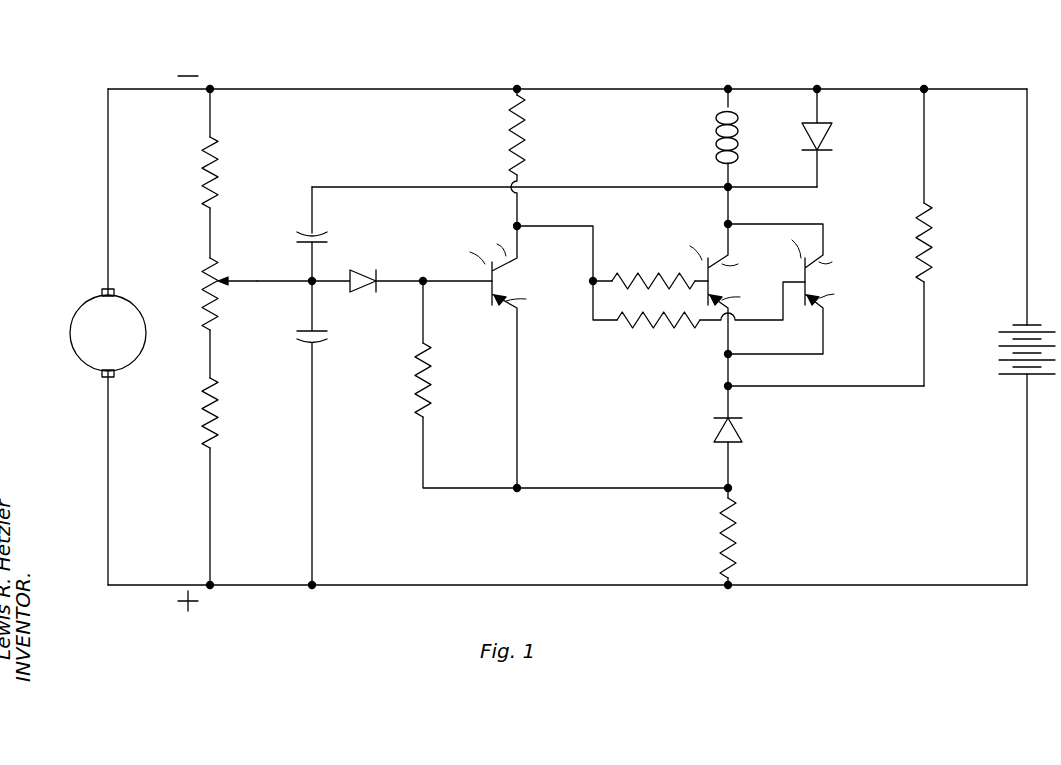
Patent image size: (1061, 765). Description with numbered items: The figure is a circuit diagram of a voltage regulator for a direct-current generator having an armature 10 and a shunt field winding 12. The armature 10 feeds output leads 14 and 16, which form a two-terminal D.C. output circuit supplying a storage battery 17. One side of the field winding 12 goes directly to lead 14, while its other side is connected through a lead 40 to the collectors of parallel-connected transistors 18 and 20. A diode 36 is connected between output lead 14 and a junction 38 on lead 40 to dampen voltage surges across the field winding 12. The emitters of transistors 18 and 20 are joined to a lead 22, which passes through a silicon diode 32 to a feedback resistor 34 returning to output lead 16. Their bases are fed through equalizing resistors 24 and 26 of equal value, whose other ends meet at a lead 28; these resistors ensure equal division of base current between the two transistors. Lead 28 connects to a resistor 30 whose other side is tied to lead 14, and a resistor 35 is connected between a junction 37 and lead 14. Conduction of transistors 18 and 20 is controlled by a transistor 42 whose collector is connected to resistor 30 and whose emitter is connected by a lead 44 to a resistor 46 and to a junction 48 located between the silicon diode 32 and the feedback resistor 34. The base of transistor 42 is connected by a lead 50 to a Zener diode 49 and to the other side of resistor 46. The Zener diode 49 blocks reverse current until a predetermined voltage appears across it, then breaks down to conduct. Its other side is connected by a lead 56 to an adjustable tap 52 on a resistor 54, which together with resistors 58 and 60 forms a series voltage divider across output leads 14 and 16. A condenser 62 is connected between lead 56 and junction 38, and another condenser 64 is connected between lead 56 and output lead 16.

The armature 10 is at (72, 333).
The shunt field winding 12 is at (717, 128).
The output lead 14 is at (413, 89).
The output lead 16 is at (390, 585).
The storage battery 17 is at (1003, 328).
The transistor 18 is at (713, 283).
The transistor 20 is at (810, 283).
The lead 22 is at (735, 372).
The equalizing resistor 24 is at (634, 273).
The equalizing resistor 26 is at (660, 328).
The lead 28 is at (558, 226).
The resistor 30 is at (527, 134).
The silicon diode 32 is at (742, 433).
The feedback resistor 34 is at (740, 536).
The resistor 35 is at (932, 243).
The diode 36 is at (830, 138).
The junction 37 is at (727, 388).
The junction 38 is at (734, 189).
The lead 40 is at (727, 206).
The transistor 42 is at (510, 285).
The lead 44 is at (573, 488).
The resistor 46 is at (432, 379).
The junction 48 is at (733, 486).
The Zener diode 49 is at (362, 268).
The lead 50 is at (400, 280).
The adjustable tap 52 is at (228, 278).
The resistor 54 is at (203, 293).
The lead 56 is at (257, 281).
The resistor 58 is at (216, 413).
The resistor 60 is at (217, 174).
The condenser 62 is at (290, 233).
The condenser 64 is at (325, 338).